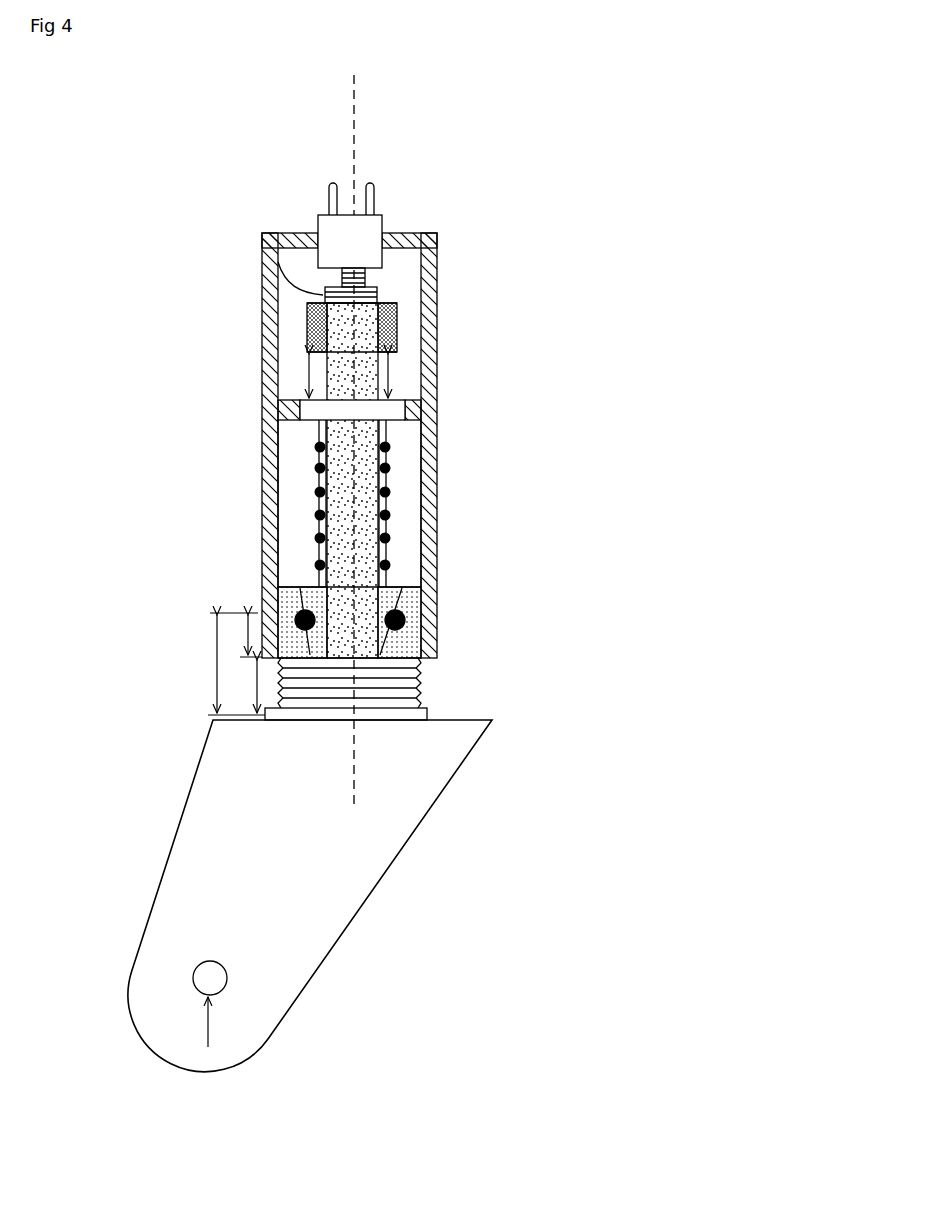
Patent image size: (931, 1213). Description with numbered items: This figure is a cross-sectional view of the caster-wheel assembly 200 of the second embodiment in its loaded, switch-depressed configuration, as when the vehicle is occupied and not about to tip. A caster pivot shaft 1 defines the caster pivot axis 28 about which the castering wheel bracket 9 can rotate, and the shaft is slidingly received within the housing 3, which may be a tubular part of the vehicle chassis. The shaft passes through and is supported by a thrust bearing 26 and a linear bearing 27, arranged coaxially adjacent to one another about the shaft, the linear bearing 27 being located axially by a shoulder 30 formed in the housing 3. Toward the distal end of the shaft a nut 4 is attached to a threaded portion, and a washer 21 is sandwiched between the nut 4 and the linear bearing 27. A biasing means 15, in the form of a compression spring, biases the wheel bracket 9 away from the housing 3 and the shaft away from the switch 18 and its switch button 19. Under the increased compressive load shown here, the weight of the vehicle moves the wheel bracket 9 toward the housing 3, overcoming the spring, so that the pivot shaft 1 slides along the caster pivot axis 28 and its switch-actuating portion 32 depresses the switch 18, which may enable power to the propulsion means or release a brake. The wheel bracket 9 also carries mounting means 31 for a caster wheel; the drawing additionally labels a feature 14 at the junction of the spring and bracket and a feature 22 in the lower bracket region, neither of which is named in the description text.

The caster-wheel assembly 200 is at (527, 173).
The caster pivot axis 28 is at (357, 108).
The housing 3 is at (268, 298).
The shoulder 30 is at (260, 417).
The switch-actuating portion 32 is at (265, 260).
The switch 18 is at (363, 242).
The switch button 19 is at (385, 267).
The caster pivot shaft 1 is at (360, 552).
The nut 4 is at (397, 307).
The washer 21 is at (392, 410).
The linear bearing 27 is at (437, 478).
The thrust bearing 26 is at (403, 640).
The biasing means 15 is at (428, 675).
The flange 14 is at (427, 708).
The wheel bracket 9 is at (417, 792).
The hole 22 is at (213, 972).
The mounting means 31 is at (195, 975).